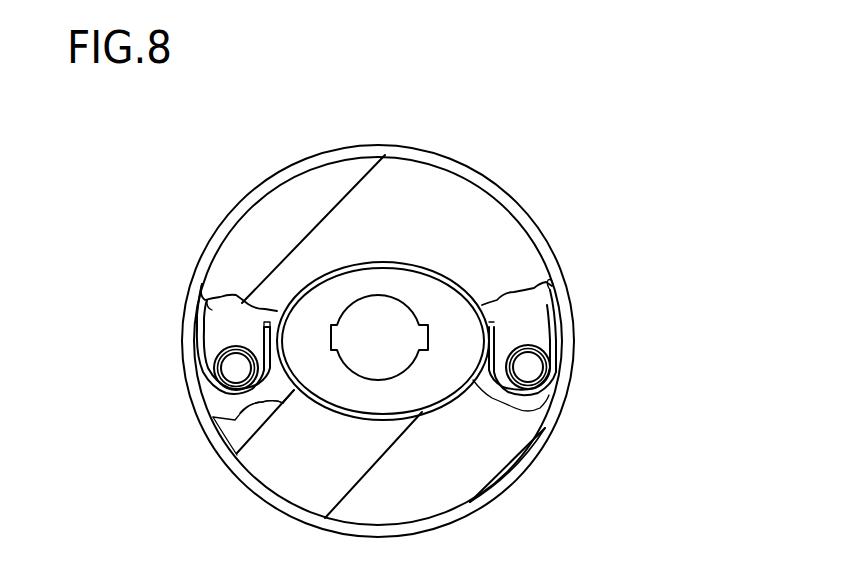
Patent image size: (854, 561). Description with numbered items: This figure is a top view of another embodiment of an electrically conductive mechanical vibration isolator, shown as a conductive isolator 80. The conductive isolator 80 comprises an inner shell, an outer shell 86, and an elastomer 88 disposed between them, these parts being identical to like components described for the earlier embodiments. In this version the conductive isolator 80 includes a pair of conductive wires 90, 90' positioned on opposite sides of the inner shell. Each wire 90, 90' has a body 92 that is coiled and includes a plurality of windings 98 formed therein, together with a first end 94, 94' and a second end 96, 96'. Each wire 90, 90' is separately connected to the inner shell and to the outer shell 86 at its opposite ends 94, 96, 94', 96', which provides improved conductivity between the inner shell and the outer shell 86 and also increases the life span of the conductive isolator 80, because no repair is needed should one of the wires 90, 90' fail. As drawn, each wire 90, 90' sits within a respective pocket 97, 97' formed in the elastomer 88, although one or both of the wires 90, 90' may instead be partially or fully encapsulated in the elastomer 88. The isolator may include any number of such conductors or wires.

The conductive isolator 80 is at (632, 118).
The outer shell 86 is at (417, 267).
The elastomer 88 is at (378, 202).
The conductive wire 90 is at (175, 371).
The conductive wire 90' is at (594, 371).
The body 92 is at (231, 388).
The first end 94 is at (267, 222).
The first end 94' is at (556, 294).
The second end 96 is at (214, 249).
The second end 96' is at (585, 345).
The pocket 97 is at (239, 273).
The pocket 97' is at (593, 269).
The windings 98 is at (197, 333).